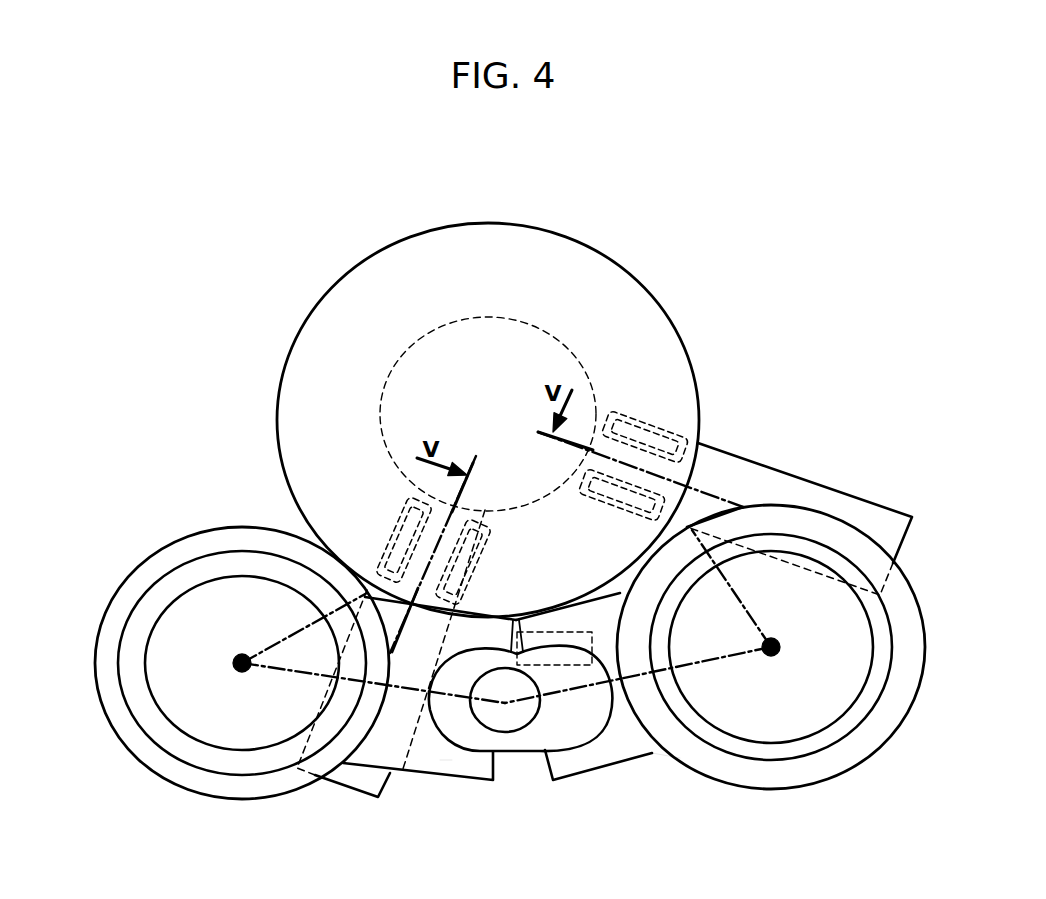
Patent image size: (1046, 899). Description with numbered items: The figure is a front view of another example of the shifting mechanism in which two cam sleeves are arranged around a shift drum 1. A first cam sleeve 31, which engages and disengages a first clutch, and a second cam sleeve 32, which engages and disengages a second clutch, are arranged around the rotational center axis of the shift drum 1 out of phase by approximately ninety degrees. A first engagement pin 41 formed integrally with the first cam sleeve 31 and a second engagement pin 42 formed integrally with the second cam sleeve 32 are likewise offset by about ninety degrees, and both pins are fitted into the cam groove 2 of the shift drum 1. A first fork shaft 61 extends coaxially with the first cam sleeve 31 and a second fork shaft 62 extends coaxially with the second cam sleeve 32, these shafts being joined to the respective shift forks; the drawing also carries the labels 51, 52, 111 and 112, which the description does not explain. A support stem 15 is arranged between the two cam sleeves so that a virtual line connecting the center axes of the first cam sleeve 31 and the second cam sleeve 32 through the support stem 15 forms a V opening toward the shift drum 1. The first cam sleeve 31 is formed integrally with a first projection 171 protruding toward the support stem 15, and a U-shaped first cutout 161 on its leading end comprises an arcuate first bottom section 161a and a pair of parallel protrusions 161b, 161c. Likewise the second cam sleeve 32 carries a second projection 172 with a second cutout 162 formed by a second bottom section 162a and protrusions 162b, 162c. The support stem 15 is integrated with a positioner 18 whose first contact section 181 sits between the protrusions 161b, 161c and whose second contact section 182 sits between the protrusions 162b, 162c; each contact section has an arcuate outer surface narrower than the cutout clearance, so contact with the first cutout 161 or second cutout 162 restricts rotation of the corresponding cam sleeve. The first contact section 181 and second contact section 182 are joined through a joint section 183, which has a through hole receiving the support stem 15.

The shift drum 1 is at (523, 250).
The cam groove 2 is at (452, 318).
The support stem 15 is at (516, 736).
The positioner 18 is at (483, 752).
The first cam sleeve 31 is at (120, 727).
The second cam sleeve 32 is at (900, 708).
The first engagement pin 41 is at (362, 755).
The second engagement pin 42 is at (768, 484).
The left shock absorber 51 is at (395, 523).
The right shock absorber 52 is at (665, 418).
The first fork shaft 61 is at (160, 743).
The second fork shaft 62 is at (853, 728).
The left wheel rim 111 is at (205, 745).
The right wheel rim 112 is at (822, 730).
The first cutout 161 is at (474, 782).
The first bottom section 161a is at (392, 762).
The protrusion 161b is at (490, 625).
The protrusion 161c is at (449, 768).
The second cutout 162 is at (592, 760).
The second bottom section 162a is at (638, 740).
The protrusion 162b is at (566, 624).
The protrusion 162c is at (610, 762).
The first projection 171 is at (318, 778).
The second projection 172 is at (680, 758).
The first contact section 181 is at (445, 762).
The second contact section 182 is at (562, 754).
The joint section 183 is at (509, 762).